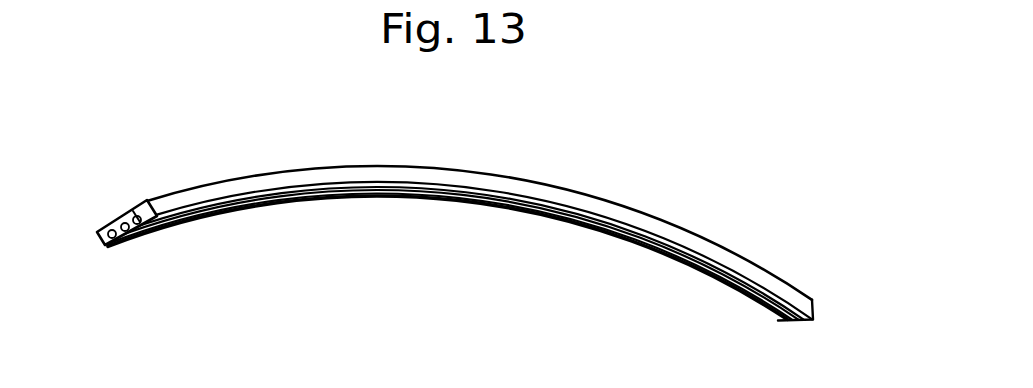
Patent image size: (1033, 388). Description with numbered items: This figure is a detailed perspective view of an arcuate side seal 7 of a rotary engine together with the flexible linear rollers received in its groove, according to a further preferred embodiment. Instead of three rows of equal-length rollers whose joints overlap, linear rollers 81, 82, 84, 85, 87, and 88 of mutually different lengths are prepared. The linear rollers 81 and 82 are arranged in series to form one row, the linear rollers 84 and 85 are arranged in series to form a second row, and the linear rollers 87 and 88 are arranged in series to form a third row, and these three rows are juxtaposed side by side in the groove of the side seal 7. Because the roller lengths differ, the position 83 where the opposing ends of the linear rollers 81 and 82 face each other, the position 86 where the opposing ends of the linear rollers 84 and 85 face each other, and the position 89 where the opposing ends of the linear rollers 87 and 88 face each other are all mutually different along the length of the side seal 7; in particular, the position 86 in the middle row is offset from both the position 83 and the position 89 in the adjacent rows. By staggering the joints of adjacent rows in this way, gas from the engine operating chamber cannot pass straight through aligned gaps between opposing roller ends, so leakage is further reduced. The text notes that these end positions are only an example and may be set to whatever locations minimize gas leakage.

The side seal 7 is at (662, 227).
The linear roller 81 is at (132, 212).
The linear roller 82 is at (502, 200).
The position of opposing ends 83 is at (323, 193).
The linear roller 84 is at (122, 218).
The linear roller 85 is at (612, 208).
The position of opposing ends 86 is at (505, 203).
The linear roller 87 is at (122, 247).
The linear roller 88 is at (743, 293).
The position of opposing ends 89 is at (650, 253).